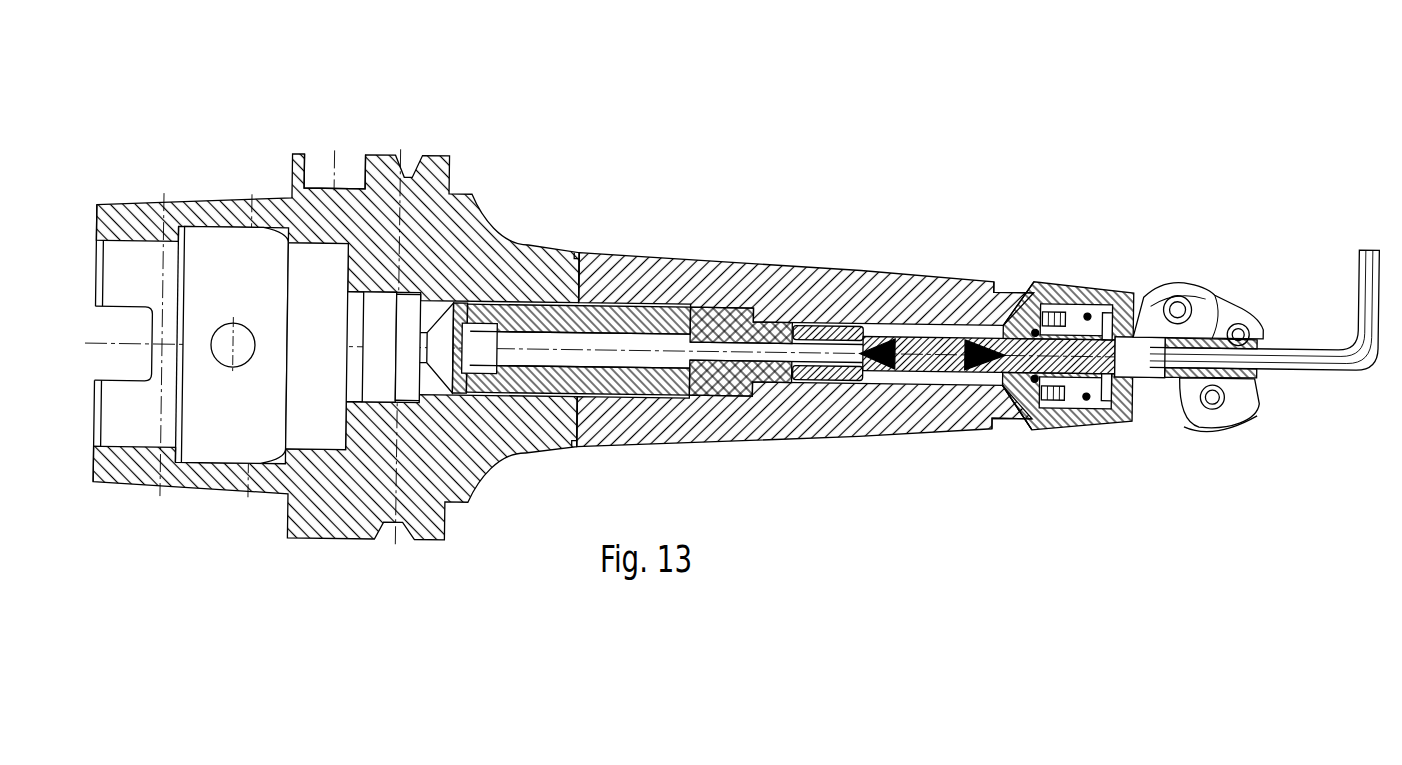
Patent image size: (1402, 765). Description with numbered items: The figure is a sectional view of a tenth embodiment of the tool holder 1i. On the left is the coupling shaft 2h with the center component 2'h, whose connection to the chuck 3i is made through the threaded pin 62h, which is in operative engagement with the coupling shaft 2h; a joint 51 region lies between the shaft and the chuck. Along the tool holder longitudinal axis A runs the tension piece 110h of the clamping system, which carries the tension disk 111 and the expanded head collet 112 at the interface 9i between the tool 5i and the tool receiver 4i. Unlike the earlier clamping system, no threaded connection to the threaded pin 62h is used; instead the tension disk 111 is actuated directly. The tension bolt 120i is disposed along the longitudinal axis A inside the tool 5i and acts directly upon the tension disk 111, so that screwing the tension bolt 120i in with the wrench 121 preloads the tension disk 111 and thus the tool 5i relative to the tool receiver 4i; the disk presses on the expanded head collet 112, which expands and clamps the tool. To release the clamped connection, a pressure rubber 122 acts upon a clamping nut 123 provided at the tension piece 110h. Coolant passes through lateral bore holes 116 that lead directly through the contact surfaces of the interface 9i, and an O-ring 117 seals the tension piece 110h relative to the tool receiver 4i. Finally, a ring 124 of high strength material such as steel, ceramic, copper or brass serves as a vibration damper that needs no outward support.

The tool holder 1i is at (732, 288).
The coupling shaft 2h is at (183, 202).
The center component 2'h is at (345, 129).
The longitudinal axis A is at (302, 342).
The coupling interface 51 is at (565, 206).
The chuck 3i is at (862, 278).
The threaded pin 62h is at (513, 306).
The pressure rubber 122 is at (728, 320).
The clamping nut 123 is at (818, 326).
The tension piece 110h is at (943, 352).
The ring 124 is at (1006, 247).
The tool 5i is at (1183, 238).
The interface 9i is at (1016, 245).
The tool receiver 4i is at (998, 384).
The O-ring 117 is at (1038, 318).
The lateral bore holes 116 is at (1053, 409).
The tension disk 111 is at (1104, 368).
The expanded head collet 112 is at (1092, 305).
The tension bolt 120i is at (1153, 376).
The wrench 121 is at (1303, 344).